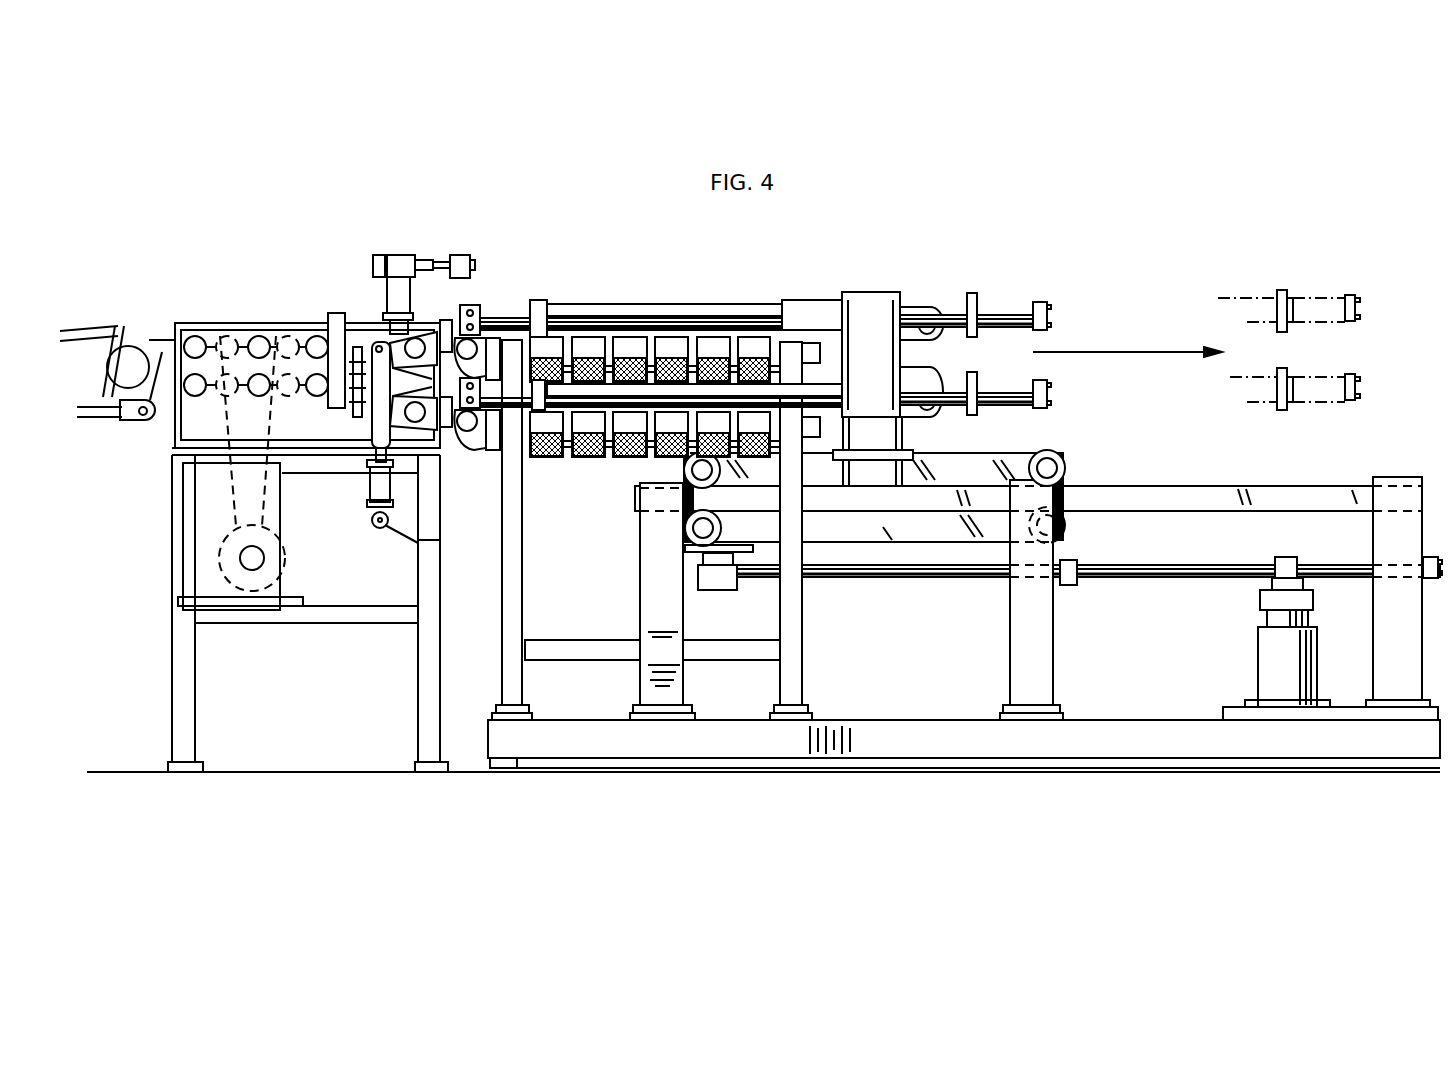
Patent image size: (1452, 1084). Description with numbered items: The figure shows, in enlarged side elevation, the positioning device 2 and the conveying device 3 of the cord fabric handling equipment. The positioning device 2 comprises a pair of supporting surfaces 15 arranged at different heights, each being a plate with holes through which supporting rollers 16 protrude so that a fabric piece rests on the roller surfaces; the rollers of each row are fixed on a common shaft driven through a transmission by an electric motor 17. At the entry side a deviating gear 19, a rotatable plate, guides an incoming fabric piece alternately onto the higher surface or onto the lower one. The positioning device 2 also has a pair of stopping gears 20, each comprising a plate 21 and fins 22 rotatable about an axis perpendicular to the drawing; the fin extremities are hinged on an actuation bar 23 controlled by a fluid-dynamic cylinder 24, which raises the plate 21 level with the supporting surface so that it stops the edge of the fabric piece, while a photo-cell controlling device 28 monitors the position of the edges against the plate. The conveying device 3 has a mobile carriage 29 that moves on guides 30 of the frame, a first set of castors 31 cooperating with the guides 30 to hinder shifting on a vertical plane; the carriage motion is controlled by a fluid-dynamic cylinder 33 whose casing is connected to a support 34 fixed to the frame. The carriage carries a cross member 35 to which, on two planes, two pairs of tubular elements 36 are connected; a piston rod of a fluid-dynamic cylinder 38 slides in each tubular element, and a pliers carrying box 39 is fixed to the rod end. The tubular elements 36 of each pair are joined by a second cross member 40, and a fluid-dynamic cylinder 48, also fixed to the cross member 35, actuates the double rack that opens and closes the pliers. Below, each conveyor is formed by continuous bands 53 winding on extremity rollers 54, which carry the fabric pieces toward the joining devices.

The positioning device 2 is at (247, 270).
The conveying device 3 is at (607, 270).
The supporting surfaces 15 is at (273, 338).
The supporting roller 16 is at (218, 331).
The electric motor 17 is at (210, 562).
The deviating gear 19 is at (138, 328).
The stopping gears 20 is at (440, 318).
The plate 21 is at (435, 370).
The fins 22 is at (400, 342).
The actuation bar 23 is at (377, 418).
The fluid-dynamic cylinder 24 is at (373, 487).
The photo-cell controlling device 28 is at (457, 252).
The carriage 29 is at (928, 533).
The guides 30 is at (1223, 485).
The first set of castors 31 is at (683, 530).
The fluid-dynamic cylinder 33 is at (1217, 568).
The support 34 is at (1278, 688).
The cross member 35 is at (878, 300).
The tubular elements 36 is at (680, 310).
The fluid-dynamic cylinder 38 is at (813, 302).
The pliers carrying box 39 is at (468, 373).
The second cross member 40 is at (542, 307).
The fluid-dynamic cylinder 48 is at (1020, 305).
The continuous bands 53 is at (750, 343).
The extremity rollers 54 is at (650, 348).